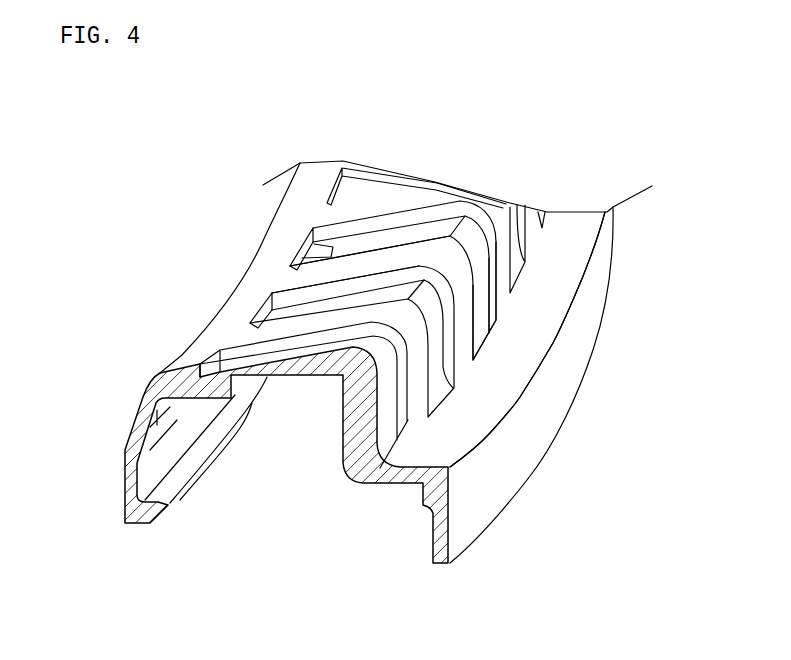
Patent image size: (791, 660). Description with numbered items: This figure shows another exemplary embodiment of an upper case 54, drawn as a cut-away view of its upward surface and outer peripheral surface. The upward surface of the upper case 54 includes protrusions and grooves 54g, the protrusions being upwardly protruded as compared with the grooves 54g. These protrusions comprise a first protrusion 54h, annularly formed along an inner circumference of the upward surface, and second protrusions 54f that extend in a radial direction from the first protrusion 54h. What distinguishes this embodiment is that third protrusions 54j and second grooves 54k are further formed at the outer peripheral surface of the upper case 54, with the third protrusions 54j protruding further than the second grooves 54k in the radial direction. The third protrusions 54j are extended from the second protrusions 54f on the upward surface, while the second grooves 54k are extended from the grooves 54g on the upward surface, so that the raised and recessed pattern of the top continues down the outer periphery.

The upper case 54 is at (137, 155).
The second protrusions 54f is at (307, 276).
The grooves 54g is at (297, 256).
The first protrusion 54h is at (240, 307).
The third protrusions 54j is at (463, 313).
The second grooves 54k is at (480, 277).